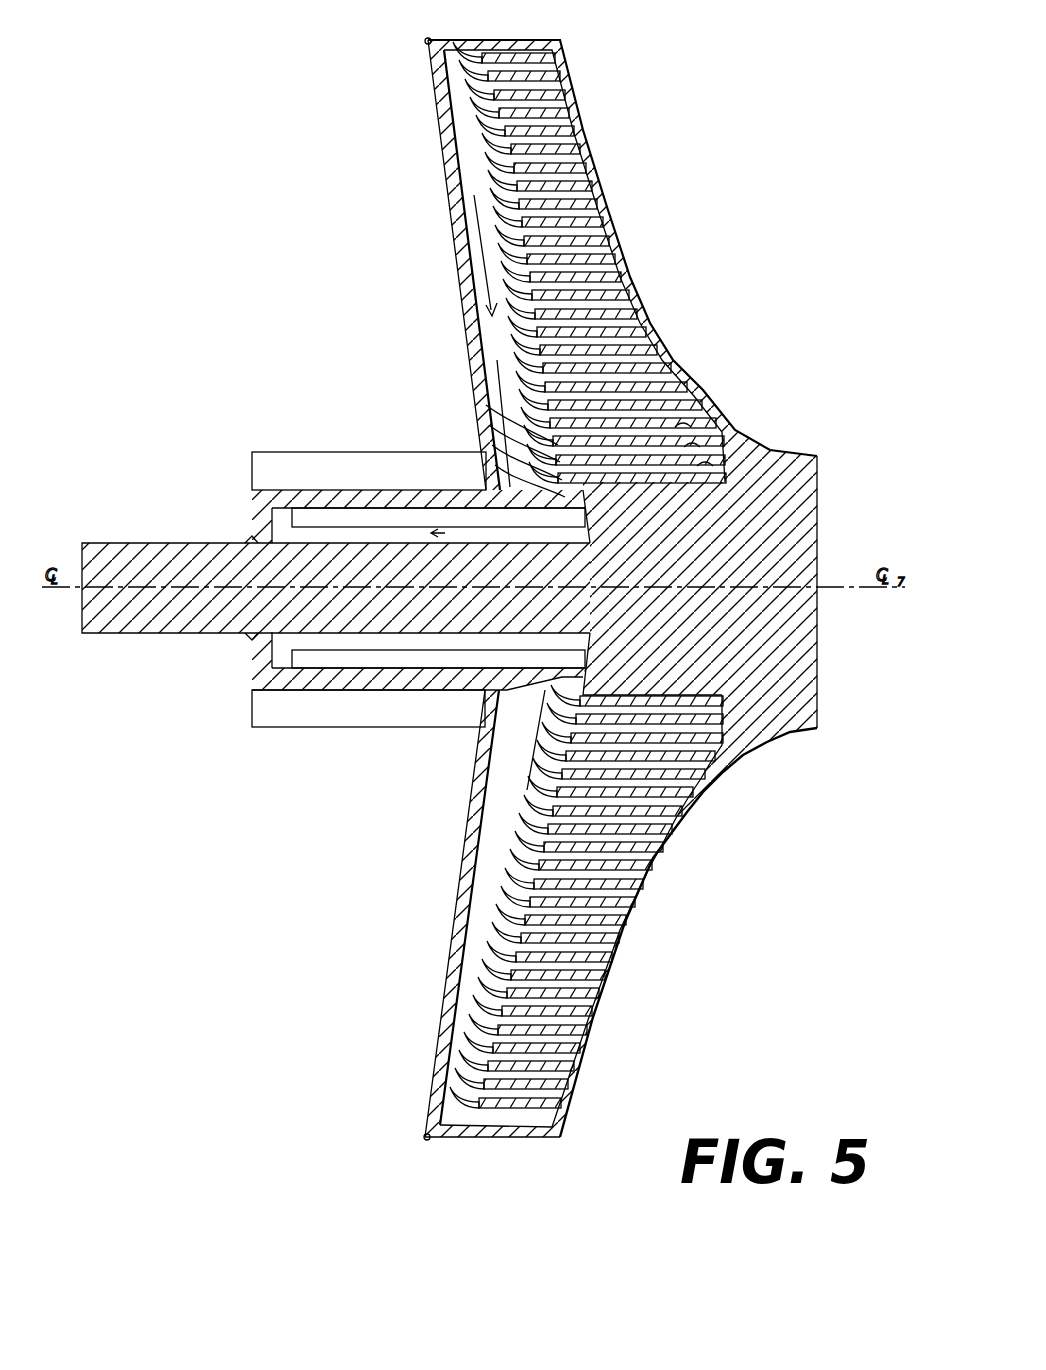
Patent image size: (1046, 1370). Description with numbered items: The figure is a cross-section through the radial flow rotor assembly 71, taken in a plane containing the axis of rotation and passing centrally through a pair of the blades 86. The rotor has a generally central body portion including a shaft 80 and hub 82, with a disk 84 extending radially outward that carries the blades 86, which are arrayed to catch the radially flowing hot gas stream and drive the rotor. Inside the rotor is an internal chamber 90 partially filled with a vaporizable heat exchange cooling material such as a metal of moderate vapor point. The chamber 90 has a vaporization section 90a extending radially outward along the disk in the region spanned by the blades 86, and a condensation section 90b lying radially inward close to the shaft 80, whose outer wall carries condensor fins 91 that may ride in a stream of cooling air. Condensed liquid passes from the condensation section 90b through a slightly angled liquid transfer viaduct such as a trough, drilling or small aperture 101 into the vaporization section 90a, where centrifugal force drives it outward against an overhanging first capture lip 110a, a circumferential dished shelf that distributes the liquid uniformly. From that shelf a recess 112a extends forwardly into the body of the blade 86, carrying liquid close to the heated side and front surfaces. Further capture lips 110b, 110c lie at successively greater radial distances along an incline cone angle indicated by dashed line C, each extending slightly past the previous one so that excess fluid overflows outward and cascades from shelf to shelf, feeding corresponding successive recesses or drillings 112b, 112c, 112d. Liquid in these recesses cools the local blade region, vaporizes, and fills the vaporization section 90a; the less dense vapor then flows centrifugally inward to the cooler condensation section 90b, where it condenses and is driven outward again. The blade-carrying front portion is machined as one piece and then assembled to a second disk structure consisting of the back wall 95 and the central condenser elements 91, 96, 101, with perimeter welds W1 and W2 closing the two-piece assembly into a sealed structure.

The radial flow rotor assembly 71 is at (288, 211).
The shaft 80 is at (135, 627).
The hub 82 is at (805, 503).
The disk 84 is at (675, 260).
The blades 86 is at (656, 323).
The internal chamber 90 is at (438, 328).
The vaporization section 90a is at (513, 380).
The condensation section 90b is at (428, 588).
The condensor fins 91 is at (315, 768).
The back wall 95 is at (442, 160).
The central condenser element 96 is at (445, 690).
The liquid transfer viaduct 101 is at (283, 517).
The first capture lip 110a is at (485, 437).
The capture lip 110b is at (482, 417).
The capture lip 110c is at (480, 397).
The recess 112a is at (500, 473).
The recess 112b is at (753, 437).
The recess 112c is at (720, 418).
The recess 112d is at (698, 402).
The perimeter weld W1 is at (425, 40).
The perimeter weld W2 is at (250, 542).
The incline cone angle line C is at (500, 887).